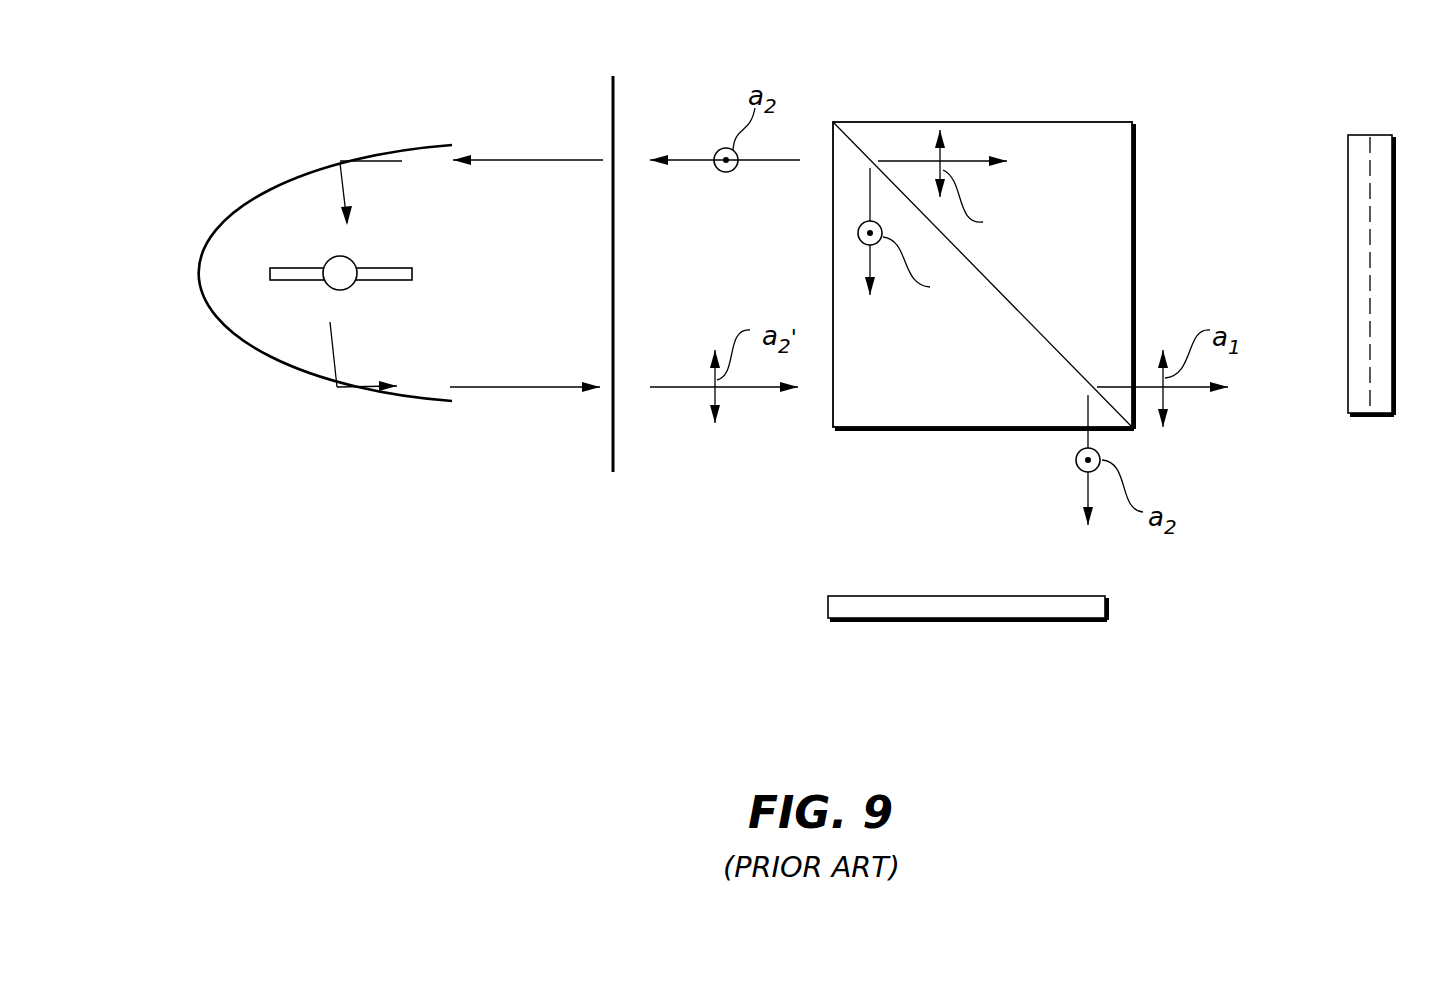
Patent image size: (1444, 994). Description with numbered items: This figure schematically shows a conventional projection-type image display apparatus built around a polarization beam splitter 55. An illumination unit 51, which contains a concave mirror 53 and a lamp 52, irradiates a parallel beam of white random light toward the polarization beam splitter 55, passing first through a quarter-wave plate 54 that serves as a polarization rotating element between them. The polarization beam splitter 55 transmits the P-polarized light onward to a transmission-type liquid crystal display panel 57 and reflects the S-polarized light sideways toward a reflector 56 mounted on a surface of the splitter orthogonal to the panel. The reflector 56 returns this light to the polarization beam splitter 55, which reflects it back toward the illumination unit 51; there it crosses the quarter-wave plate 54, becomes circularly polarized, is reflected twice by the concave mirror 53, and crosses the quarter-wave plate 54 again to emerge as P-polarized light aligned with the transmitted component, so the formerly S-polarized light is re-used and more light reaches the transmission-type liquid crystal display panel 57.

The illumination unit 51 is at (456, 472).
The lamp 52 is at (380, 268).
The concave mirror 53 is at (303, 168).
The quarter-wave plate 54 is at (607, 445).
The polarization beam splitter 55 is at (982, 120).
The reflector 56 is at (967, 620).
The transmission-type liquid crystal display panel 57 is at (1372, 417).